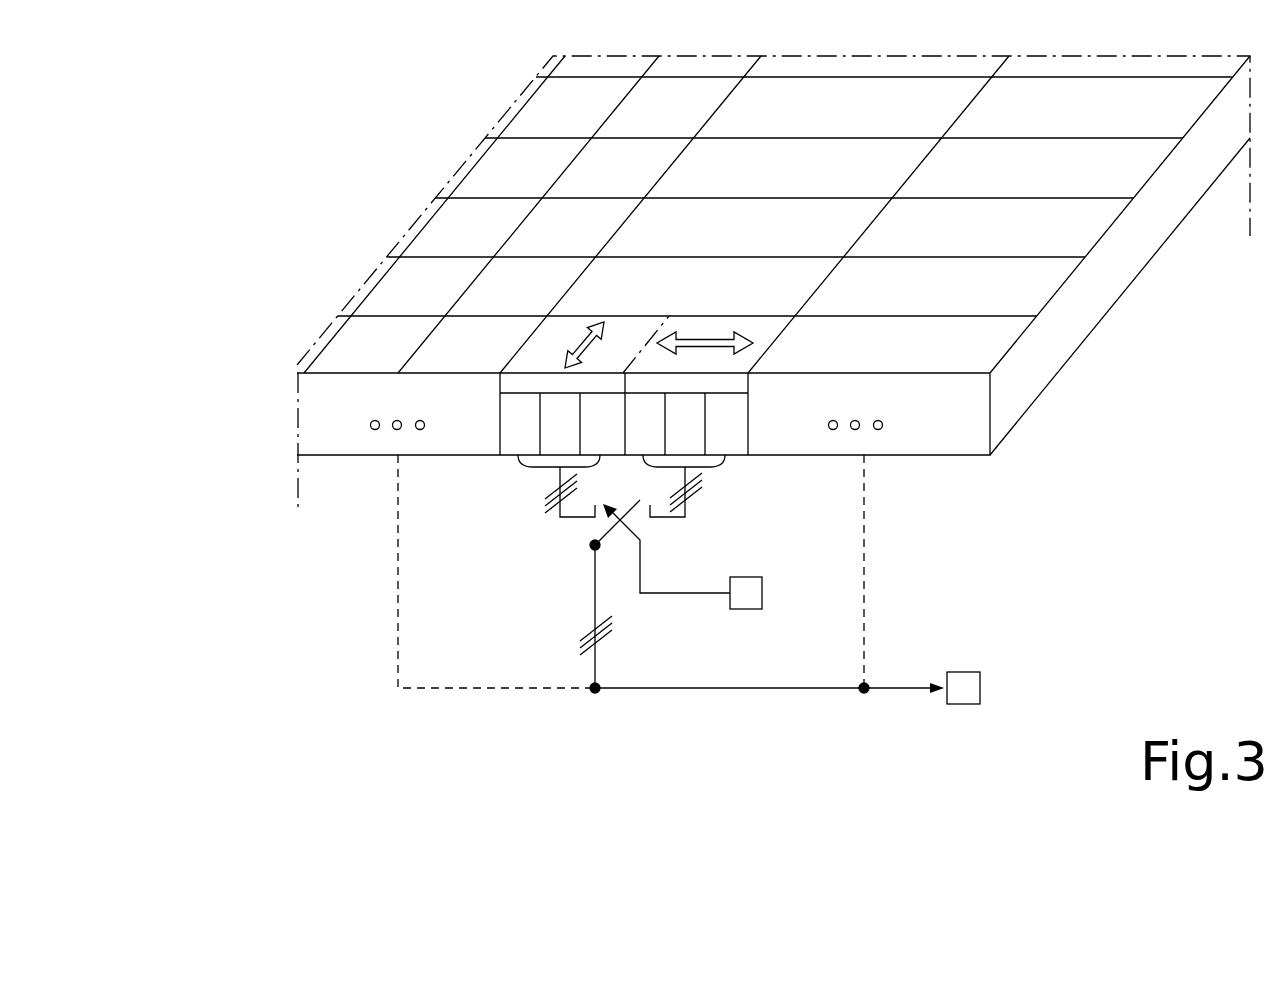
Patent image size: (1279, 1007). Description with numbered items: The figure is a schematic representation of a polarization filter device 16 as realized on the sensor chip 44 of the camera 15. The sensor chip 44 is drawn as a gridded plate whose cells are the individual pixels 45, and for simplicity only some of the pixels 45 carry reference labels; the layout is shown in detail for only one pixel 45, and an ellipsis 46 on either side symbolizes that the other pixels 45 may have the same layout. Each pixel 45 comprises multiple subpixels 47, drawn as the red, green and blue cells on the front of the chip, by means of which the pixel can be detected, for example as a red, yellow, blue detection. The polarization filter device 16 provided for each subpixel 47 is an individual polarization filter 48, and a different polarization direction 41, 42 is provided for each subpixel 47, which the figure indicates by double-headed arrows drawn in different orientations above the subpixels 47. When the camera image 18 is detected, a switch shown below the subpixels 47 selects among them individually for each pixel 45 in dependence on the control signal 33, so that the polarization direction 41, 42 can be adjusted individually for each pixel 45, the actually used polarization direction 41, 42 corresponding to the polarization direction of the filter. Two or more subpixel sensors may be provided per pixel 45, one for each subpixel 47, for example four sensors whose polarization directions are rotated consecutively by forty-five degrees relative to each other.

The camera 15 is at (1092, 517).
The polarization filter device 16 is at (260, 529).
The camera image 18 is at (962, 672).
The control signal 33 is at (745, 577).
The polarization direction 41 is at (575, 358).
The polarization direction 42 is at (755, 340).
The sensor chip 44 is at (1065, 365).
The pixel 45 is at (518, 275).
The ellipsis 46 is at (385, 440).
The subpixel 47 is at (500, 378).
The individual polarization filter 48 is at (642, 325).